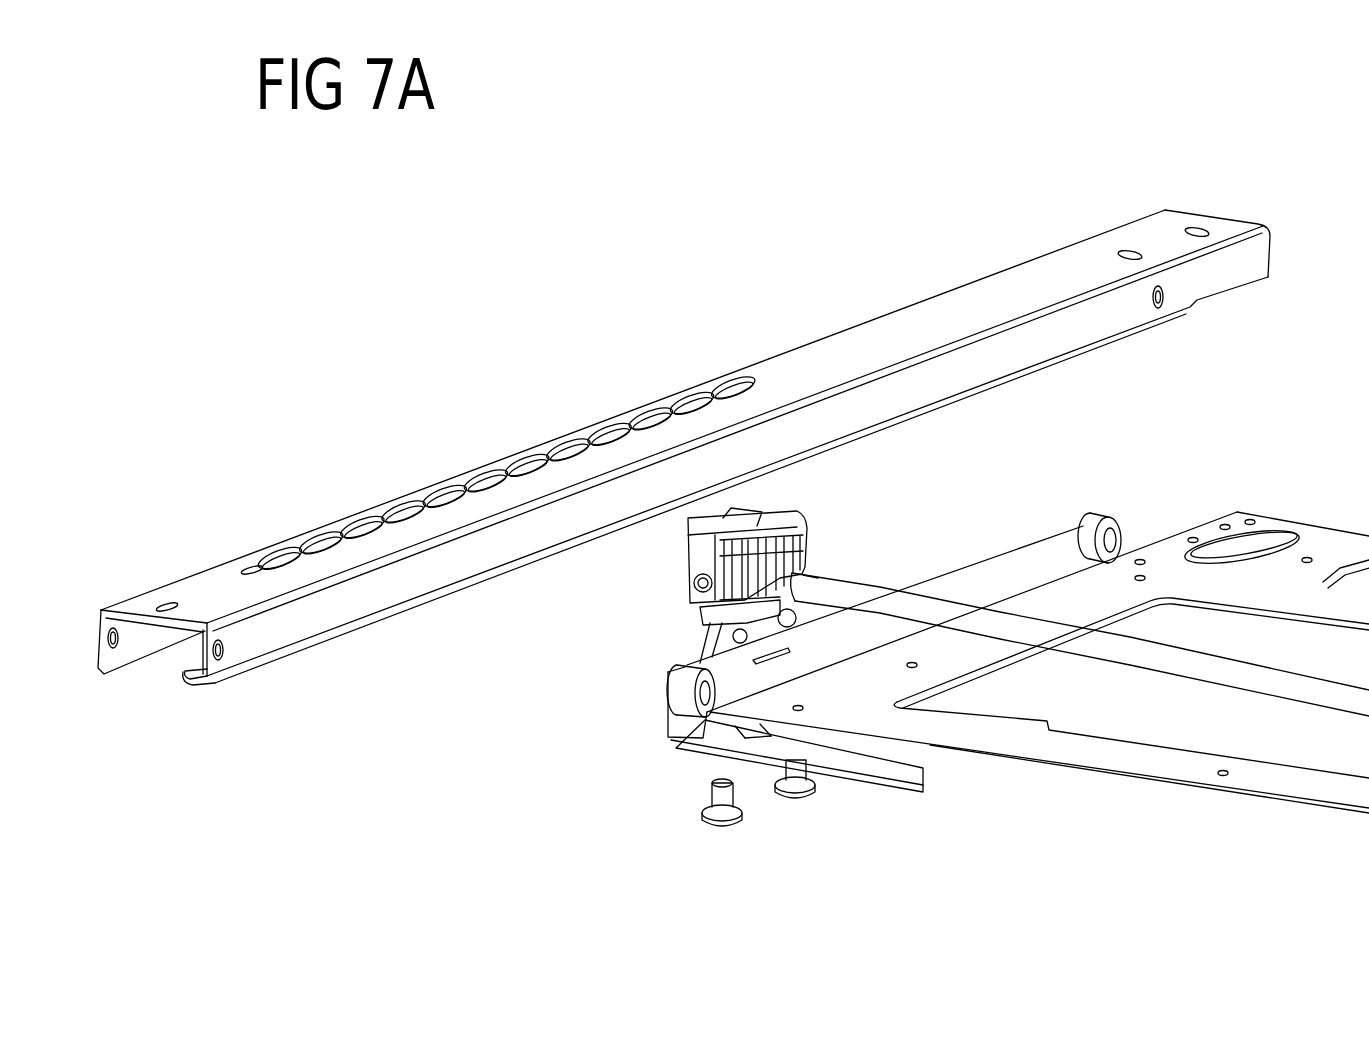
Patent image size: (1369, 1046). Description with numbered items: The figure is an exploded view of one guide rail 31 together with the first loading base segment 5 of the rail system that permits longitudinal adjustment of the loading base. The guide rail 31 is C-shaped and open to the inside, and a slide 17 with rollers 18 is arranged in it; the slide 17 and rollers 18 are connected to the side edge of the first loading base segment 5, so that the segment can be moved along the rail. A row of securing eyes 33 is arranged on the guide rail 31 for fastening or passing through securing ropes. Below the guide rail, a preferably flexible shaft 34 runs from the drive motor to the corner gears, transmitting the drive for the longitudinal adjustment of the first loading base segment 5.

The first loading base segment 5 is at (1177, 765).
The slide 17 is at (810, 553).
The rollers 18 is at (1110, 515).
The guide rail 31 is at (917, 326).
The securing eyes 33 is at (498, 463).
The flexible shaft 34 is at (1122, 652).